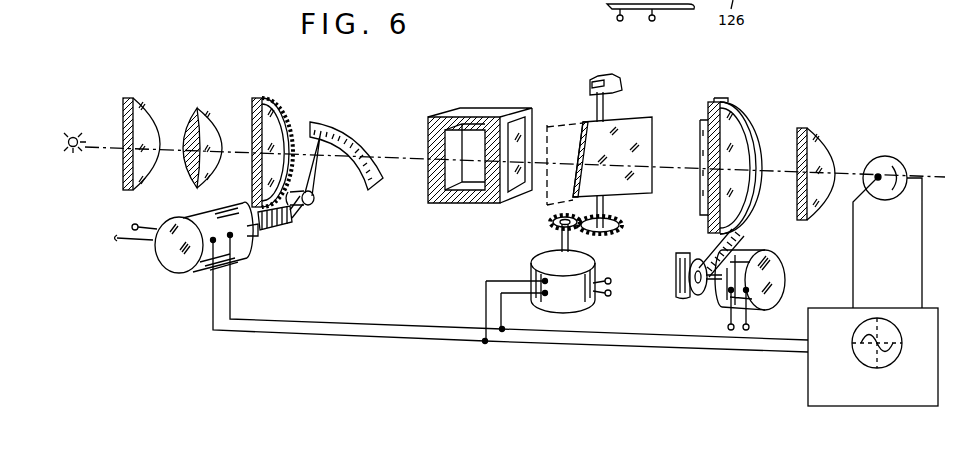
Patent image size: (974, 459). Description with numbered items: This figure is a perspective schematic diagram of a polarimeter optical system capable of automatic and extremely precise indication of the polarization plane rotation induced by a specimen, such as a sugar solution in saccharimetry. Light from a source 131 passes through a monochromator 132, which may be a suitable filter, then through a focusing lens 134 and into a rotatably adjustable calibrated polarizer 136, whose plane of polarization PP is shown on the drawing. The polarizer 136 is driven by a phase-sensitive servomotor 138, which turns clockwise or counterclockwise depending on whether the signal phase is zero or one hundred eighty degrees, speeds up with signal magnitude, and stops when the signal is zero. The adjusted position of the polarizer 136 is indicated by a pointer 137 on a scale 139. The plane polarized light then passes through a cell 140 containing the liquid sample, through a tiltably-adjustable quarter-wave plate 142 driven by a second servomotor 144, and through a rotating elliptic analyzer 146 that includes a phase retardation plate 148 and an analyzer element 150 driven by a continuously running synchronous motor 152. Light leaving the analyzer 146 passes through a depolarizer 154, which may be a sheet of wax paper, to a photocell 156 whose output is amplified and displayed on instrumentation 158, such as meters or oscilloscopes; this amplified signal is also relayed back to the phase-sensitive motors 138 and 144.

The light source 131 is at (68, 136).
The monochromator 132 is at (146, 110).
The focusing lens 134 is at (213, 120).
The rotatably adjustable calibrated polarizer 136 is at (300, 109).
The plane of polarization PP is at (302, 96).
The pointer 137 is at (317, 174).
The scale 139 is at (345, 130).
The phase-sensitive servomotor 138 is at (240, 241).
The cell 140 is at (485, 113).
The tiltably-adjustable quarter-wave plate 142 is at (635, 119).
The second servomotor 144 is at (572, 302).
The rotating elliptic analyzer 146 is at (762, 106).
The phase retardation plate 148 is at (706, 196).
The analyzer element 150 is at (742, 187).
The synchronous motor 152 is at (774, 273).
The depolarizer 154 is at (828, 143).
The photocell 156 is at (896, 157).
The instrumentation 158 is at (858, 396).